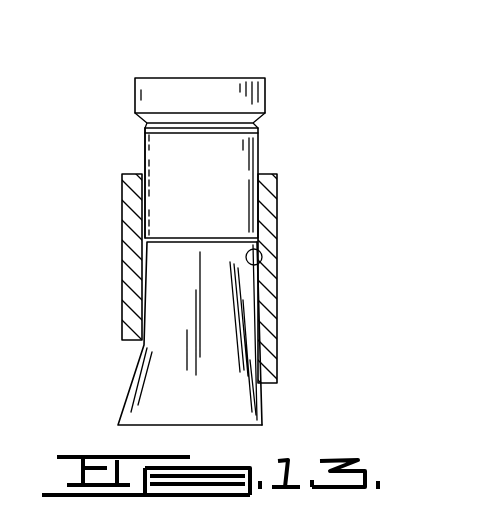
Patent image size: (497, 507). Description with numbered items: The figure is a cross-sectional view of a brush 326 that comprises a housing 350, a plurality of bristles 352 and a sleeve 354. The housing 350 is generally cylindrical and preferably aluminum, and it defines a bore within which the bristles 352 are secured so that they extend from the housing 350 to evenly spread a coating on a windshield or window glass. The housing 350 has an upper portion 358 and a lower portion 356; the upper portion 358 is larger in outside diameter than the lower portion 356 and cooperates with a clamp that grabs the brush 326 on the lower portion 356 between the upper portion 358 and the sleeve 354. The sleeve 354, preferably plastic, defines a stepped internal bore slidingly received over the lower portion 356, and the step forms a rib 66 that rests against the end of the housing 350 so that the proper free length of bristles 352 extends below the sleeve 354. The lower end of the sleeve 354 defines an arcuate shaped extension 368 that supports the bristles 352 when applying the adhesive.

The brush 326 is at (337, 123).
The upper portion 358 is at (199, 92).
The housing 350 is at (170, 157).
The lower portion 356 is at (230, 220).
The sleeve 354 is at (272, 194).
The rib 66 is at (262, 255).
The arcuate shaped extension 368 is at (262, 371).
The bristles 352 is at (250, 412).